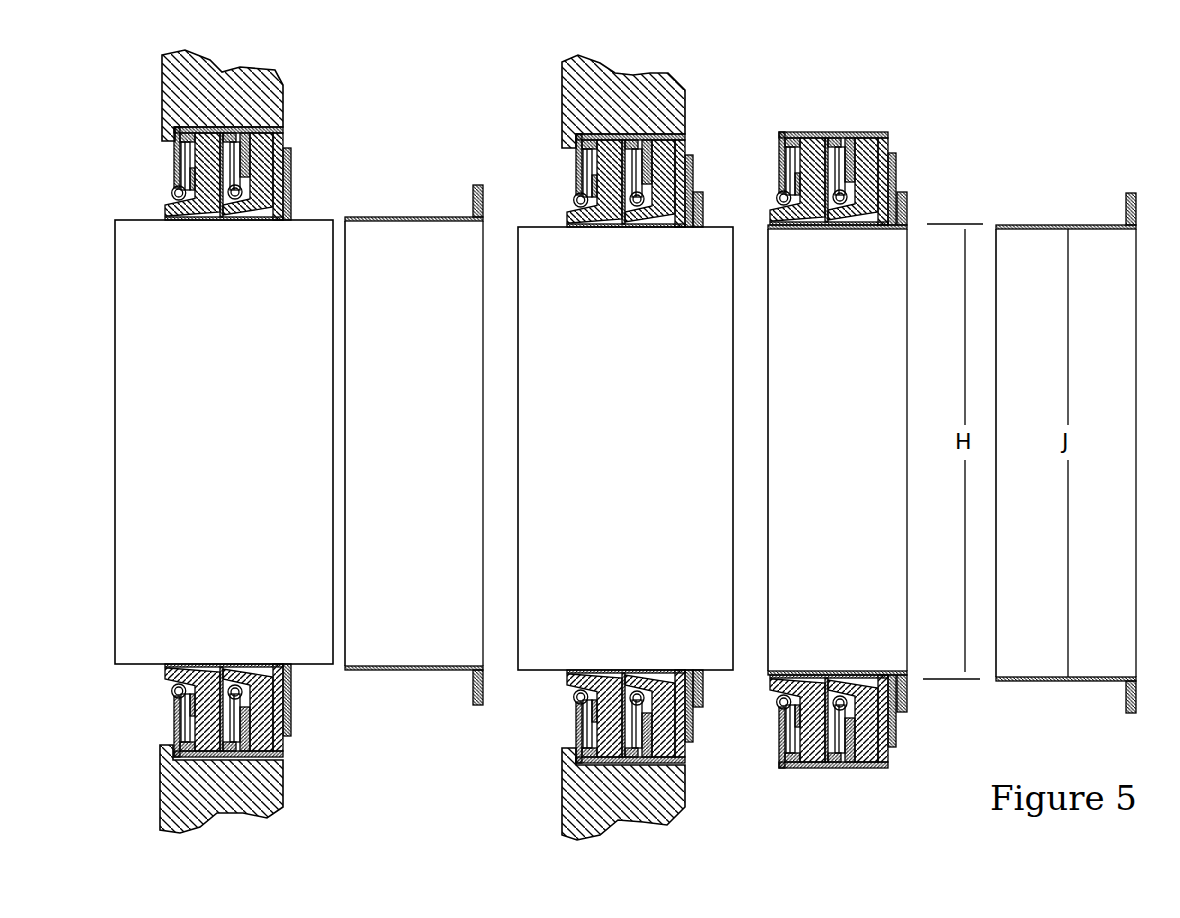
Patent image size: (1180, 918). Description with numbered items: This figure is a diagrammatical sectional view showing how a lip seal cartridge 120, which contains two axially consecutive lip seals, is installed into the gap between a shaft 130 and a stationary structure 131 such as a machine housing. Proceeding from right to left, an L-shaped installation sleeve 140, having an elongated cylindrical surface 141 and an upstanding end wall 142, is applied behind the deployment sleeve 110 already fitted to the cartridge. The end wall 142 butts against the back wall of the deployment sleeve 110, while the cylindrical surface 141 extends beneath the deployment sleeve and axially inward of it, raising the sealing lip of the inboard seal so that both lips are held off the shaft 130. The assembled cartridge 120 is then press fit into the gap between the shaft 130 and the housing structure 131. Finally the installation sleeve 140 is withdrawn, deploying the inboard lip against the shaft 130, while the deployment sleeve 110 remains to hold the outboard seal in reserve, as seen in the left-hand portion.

The deployment sleeve 110 is at (292, 150).
The lip seal cartridge 120 is at (830, 133).
The shaft 130 is at (240, 440).
The stationary structure 131 is at (568, 90).
The installation sleeve 140 is at (408, 214).
The cylindrical surface 141 is at (1038, 230).
The end wall 142 is at (1136, 209).